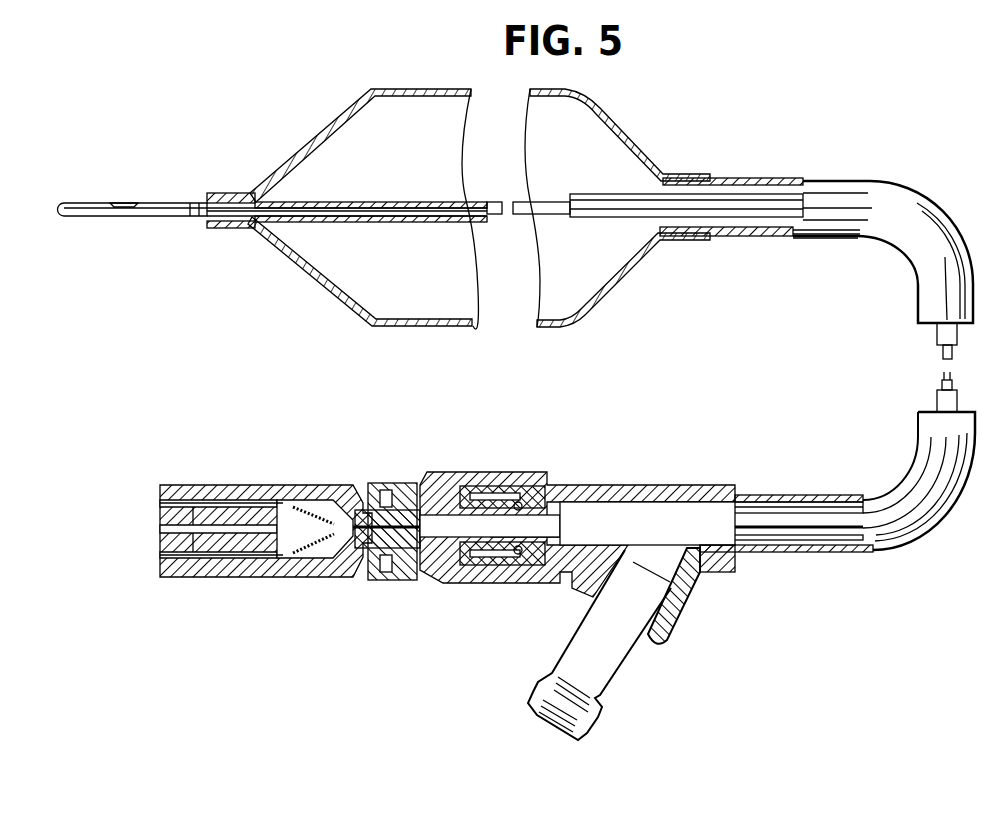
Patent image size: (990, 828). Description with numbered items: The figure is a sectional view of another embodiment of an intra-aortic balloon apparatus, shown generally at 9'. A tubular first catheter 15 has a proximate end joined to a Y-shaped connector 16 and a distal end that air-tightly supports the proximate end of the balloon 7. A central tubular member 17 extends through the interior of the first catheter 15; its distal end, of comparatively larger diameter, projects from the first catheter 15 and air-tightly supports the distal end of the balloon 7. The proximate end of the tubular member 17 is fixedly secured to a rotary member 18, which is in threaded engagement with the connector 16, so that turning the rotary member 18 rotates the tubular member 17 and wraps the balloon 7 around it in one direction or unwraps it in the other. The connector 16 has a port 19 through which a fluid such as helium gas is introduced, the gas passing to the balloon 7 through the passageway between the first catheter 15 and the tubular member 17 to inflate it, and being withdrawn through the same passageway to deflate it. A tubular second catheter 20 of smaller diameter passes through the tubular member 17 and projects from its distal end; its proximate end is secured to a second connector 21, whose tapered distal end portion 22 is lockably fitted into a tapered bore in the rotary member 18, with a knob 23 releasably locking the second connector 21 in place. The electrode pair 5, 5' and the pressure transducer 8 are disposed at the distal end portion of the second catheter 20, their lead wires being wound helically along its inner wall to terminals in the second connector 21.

The electrode 5 is at (129, 177).
The pressure transducer 8 is at (110, 203).
The electrode 5' is at (198, 177).
The balloon 7 is at (345, 112).
The intra-aortic balloon apparatus 9' is at (617, 200).
The first catheter 15 is at (770, 178).
The central tubular member 17 is at (415, 223).
The second catheter 20 is at (243, 228).
The second connector 21 is at (250, 578).
The knob 23 is at (388, 481).
The rotary member 18 is at (445, 482).
The tapered distal end portion 22 is at (430, 560).
The Y-shaped connector 16 is at (688, 598).
The port 19 is at (563, 697).